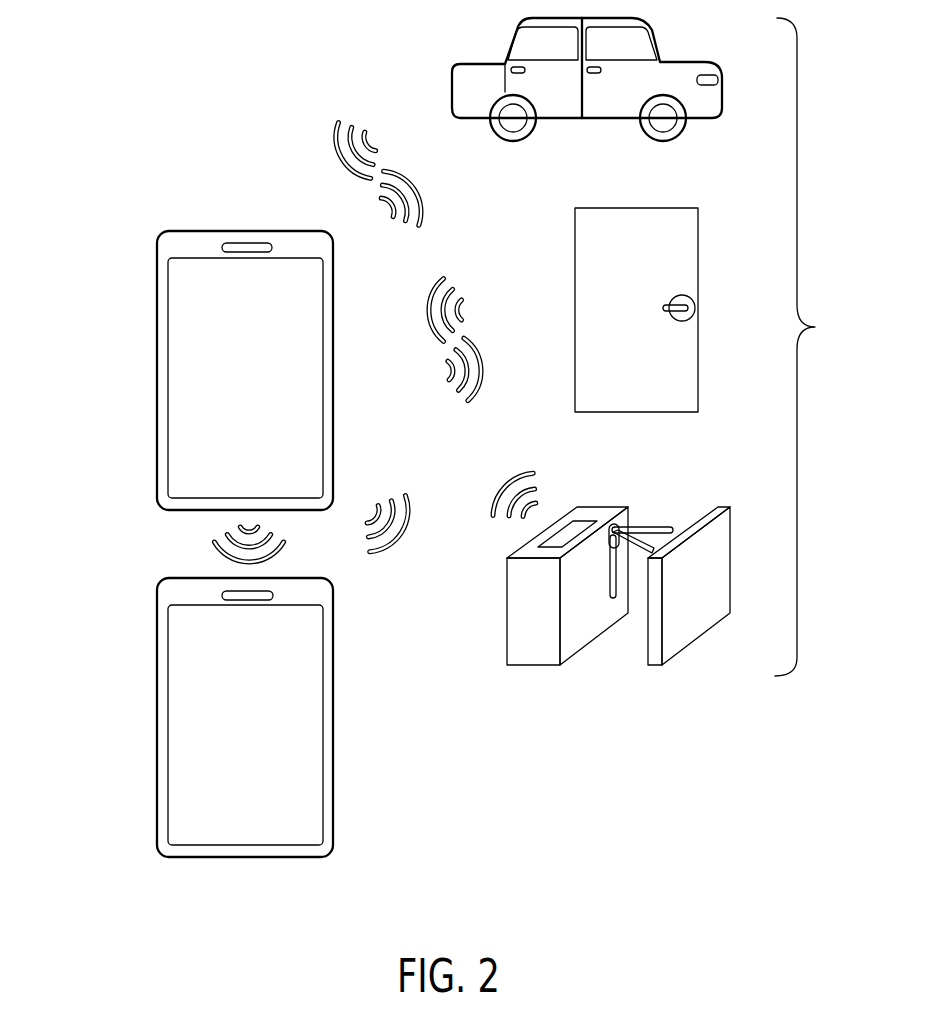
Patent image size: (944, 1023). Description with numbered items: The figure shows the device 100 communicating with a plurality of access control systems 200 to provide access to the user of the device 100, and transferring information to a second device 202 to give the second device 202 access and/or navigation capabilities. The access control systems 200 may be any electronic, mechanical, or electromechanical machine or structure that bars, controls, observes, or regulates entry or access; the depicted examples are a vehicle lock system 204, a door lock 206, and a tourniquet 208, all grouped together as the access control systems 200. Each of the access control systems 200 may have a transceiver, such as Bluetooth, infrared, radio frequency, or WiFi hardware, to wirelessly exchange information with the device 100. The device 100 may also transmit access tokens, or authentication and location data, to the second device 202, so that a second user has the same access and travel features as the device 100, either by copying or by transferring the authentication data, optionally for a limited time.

The device 100 is at (236, 181).
The access control systems 200 is at (811, 347).
The second device 202 is at (113, 676).
The vehicle lock system 204 is at (657, 43).
The door lock 206 is at (699, 345).
The tourniquet 208 is at (608, 720).